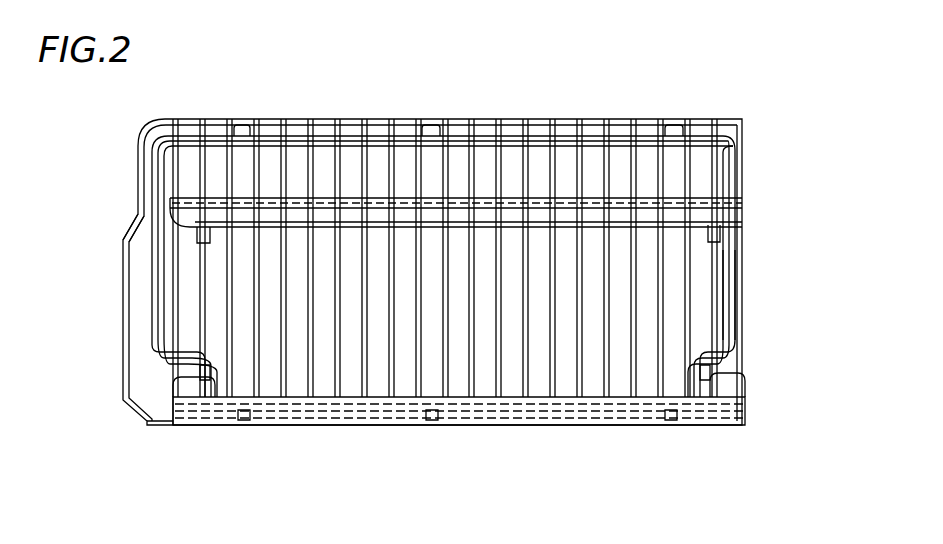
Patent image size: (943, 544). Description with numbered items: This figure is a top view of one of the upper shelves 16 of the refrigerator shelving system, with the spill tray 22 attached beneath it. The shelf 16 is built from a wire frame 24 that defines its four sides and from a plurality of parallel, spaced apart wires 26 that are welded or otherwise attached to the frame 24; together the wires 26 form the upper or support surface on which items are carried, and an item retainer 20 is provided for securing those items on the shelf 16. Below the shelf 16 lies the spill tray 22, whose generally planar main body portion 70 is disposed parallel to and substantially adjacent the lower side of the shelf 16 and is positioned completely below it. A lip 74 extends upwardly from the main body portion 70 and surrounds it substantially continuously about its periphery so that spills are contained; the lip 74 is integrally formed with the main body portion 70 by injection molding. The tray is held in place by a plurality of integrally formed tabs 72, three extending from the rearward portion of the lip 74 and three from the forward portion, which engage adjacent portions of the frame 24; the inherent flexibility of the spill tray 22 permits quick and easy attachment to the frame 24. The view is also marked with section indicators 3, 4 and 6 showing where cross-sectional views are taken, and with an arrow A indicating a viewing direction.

The shelf 16 is at (121, 288).
The item retainer 20 is at (220, 192).
The spill tray 22 is at (148, 330).
The wire frame 24 is at (168, 422).
The wires 26 is at (665, 290).
The main body portion 70 is at (572, 180).
The tabs 72 is at (242, 125).
The lip 74 is at (121, 247).
The section line 3- 3 is at (90, 172).
The section line 4- 4 is at (95, 375).
The section line 6- 6 is at (405, 70).
The direction arrow A is at (53, 275).